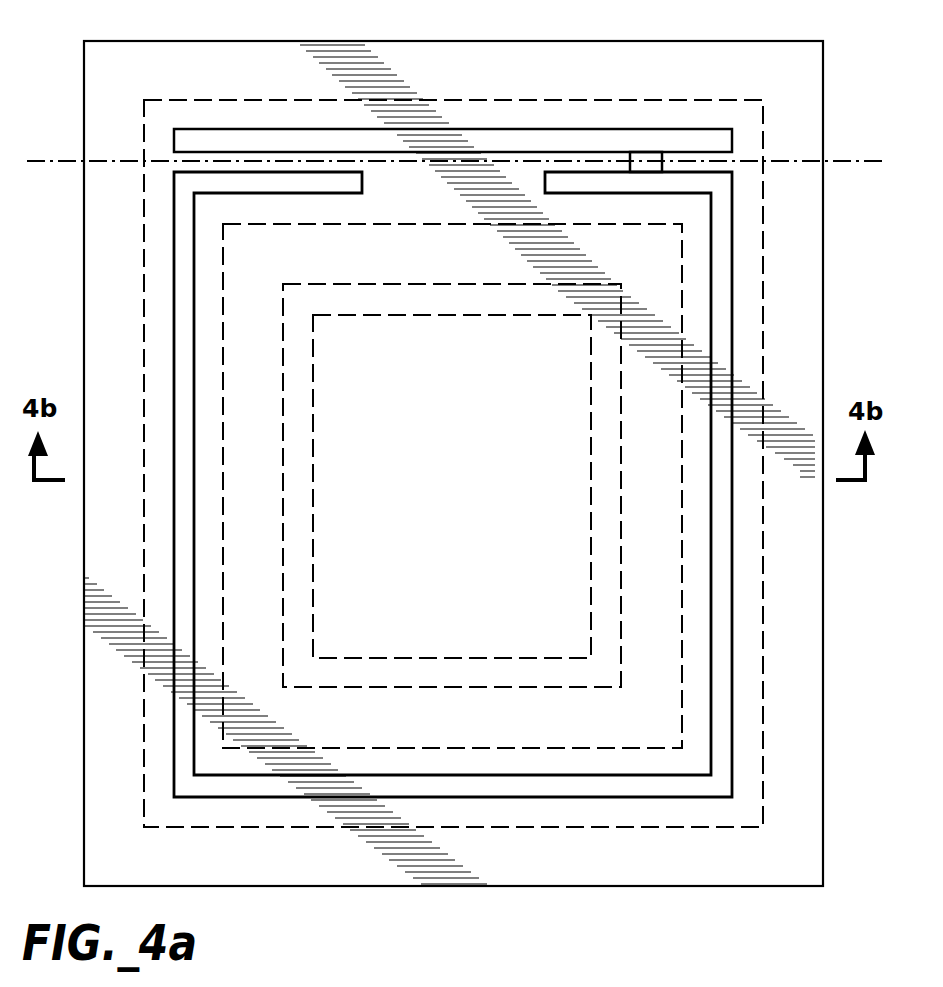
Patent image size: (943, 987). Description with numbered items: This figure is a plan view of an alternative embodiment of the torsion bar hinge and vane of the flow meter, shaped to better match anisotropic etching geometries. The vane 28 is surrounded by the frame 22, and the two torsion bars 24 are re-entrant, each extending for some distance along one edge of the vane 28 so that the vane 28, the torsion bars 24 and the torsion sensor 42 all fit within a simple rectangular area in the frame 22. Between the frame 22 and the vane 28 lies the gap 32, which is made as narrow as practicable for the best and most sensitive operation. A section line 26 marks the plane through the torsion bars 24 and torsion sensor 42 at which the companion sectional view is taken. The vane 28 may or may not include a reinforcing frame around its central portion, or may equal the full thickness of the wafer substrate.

The frame 22 is at (84, 318).
The torsion bars 24 is at (295, 152).
The section line 26 is at (72, 157).
The vane 28 is at (472, 476).
The gap 32 is at (182, 743).
The torsion sensor 42 is at (646, 152).